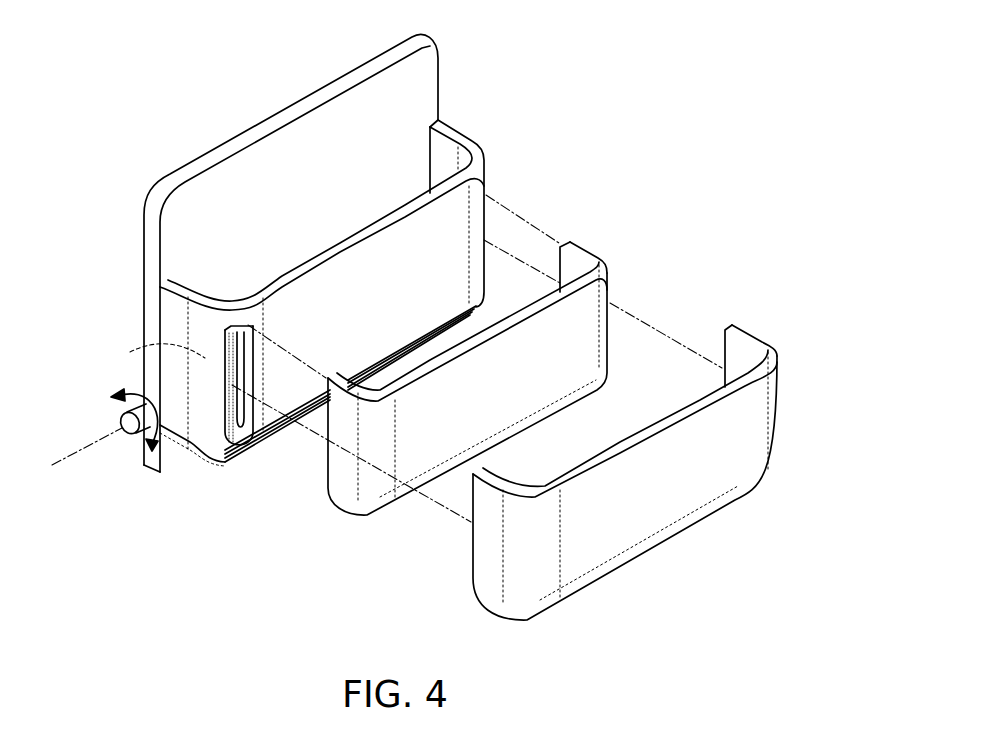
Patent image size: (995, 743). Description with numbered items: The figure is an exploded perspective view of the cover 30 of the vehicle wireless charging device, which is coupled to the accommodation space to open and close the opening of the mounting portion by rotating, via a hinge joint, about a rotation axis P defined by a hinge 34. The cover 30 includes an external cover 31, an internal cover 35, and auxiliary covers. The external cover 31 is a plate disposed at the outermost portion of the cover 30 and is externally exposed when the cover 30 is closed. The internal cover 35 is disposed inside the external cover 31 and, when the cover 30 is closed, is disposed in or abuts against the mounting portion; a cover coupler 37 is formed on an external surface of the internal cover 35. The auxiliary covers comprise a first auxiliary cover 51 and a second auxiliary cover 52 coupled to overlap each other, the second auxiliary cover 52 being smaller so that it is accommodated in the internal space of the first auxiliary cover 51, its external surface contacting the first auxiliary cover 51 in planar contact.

The cover 30 is at (293, 271).
The external cover 31 is at (143, 265).
The hinge 34 is at (126, 414).
The internal cover 35 is at (205, 356).
The cover coupler 37 is at (226, 441).
The first auxiliary cover 51 is at (737, 327).
The second auxiliary cover 52 is at (586, 249).